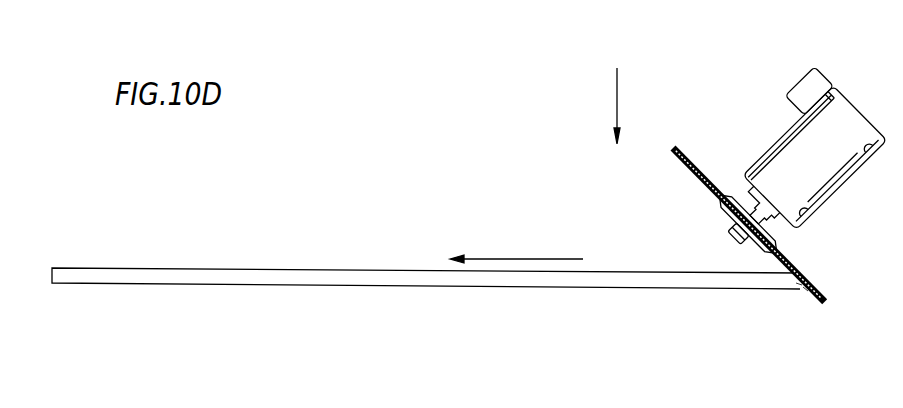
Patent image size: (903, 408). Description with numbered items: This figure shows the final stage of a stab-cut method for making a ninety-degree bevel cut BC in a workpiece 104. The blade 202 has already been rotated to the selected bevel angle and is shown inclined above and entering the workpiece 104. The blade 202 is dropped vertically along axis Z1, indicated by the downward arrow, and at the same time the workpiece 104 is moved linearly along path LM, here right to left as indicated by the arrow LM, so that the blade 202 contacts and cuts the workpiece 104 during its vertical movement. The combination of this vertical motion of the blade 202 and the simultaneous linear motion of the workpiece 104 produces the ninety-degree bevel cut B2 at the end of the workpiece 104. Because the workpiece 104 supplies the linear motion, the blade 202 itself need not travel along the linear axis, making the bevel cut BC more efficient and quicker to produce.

The workpiece 104 is at (287, 268).
The blade 202 is at (688, 148).
The vertical axis Z1 is at (616, 100).
The linear path LM is at (522, 258).
The 90-degree bevel cut B2 is at (800, 284).
The bevel cut BC is at (806, 289).